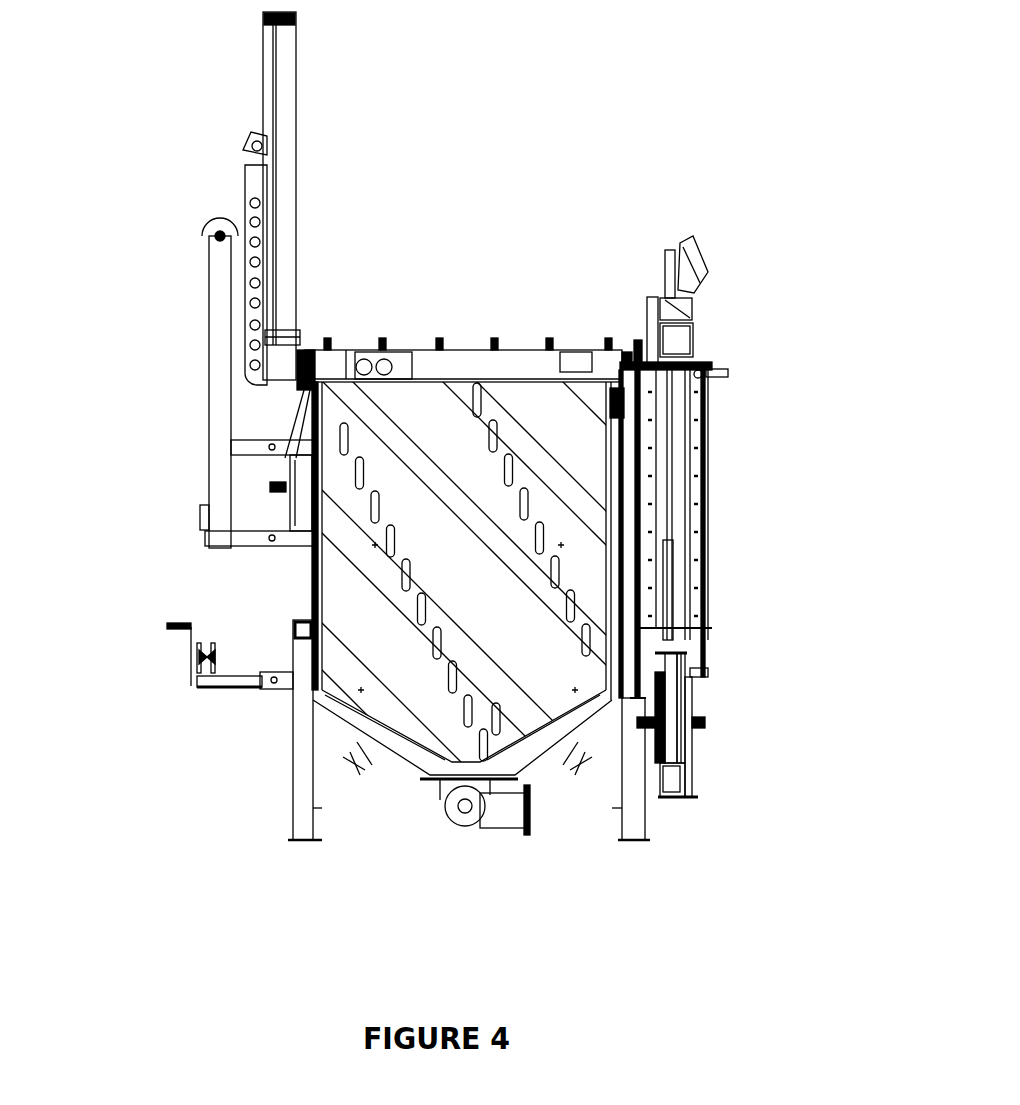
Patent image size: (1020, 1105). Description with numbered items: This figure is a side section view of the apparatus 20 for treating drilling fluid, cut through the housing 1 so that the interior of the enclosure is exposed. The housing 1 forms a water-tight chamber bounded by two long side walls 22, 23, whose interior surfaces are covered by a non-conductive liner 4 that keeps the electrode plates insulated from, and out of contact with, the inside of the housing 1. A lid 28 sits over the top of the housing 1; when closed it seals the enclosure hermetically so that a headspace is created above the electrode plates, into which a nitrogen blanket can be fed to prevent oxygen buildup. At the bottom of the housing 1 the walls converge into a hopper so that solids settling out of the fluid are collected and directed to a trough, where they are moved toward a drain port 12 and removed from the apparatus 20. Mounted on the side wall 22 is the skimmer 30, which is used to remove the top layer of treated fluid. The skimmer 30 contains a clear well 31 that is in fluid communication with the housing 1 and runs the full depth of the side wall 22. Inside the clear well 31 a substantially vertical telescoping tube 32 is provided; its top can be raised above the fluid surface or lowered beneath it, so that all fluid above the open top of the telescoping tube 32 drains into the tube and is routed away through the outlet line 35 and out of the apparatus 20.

The housing 1 is at (312, 583).
The non-conductive liner 4 is at (606, 466).
The drain port 12 is at (477, 833).
The apparatus 20 is at (806, 318).
The side wall 22 is at (708, 621).
The side wall 23 is at (307, 613).
The lid 28 is at (265, 79).
The skimmer 30 is at (712, 425).
The clear well 31 is at (693, 464).
The telescoping tube 32 is at (673, 547).
The outlet line 35 is at (690, 800).